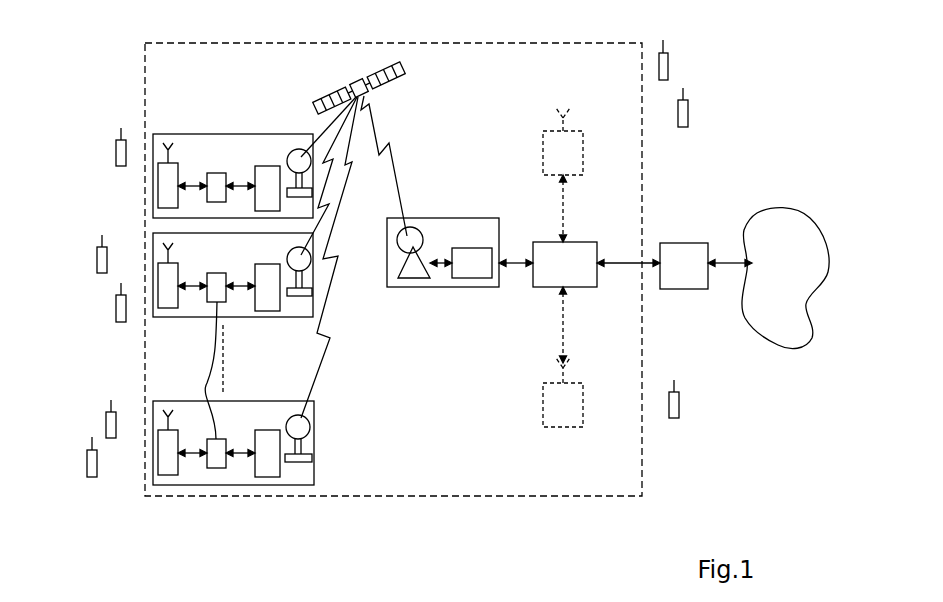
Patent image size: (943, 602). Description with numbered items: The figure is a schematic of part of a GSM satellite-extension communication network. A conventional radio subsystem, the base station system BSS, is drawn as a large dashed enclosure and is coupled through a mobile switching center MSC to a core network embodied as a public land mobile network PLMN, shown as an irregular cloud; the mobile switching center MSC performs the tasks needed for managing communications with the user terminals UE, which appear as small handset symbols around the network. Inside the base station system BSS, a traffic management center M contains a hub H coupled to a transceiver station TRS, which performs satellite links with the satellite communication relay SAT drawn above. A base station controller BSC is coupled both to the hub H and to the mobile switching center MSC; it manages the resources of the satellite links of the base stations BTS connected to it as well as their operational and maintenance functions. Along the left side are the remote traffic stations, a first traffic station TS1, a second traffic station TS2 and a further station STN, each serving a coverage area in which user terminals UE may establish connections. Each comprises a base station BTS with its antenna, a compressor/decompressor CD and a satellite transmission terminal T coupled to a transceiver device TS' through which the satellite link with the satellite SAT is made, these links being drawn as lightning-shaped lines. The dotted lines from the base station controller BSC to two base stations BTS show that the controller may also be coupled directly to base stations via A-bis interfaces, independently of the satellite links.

The base station system BSS is at (303, 43).
The satellite communication relay SAT is at (360, 78).
The user terminal UE is at (116, 150).
The base station BTS is at (158, 275).
The compressor/decompressor CD is at (210, 173).
The satellite transmission terminal T is at (255, 166).
The remote traffic station TS1 is at (285, 134).
The remote traffic station TS2 is at (197, 318).
The transceiver device TS' is at (325, 354).
The satellite transceiver node STN is at (230, 485).
The transceiver station TRS is at (420, 240).
The hub H is at (475, 248).
The traffic management center M is at (445, 287).
The base station controller BSC is at (553, 287).
The mobile switching center MSC is at (690, 289).
The public land mobile network PLMN is at (755, 215).